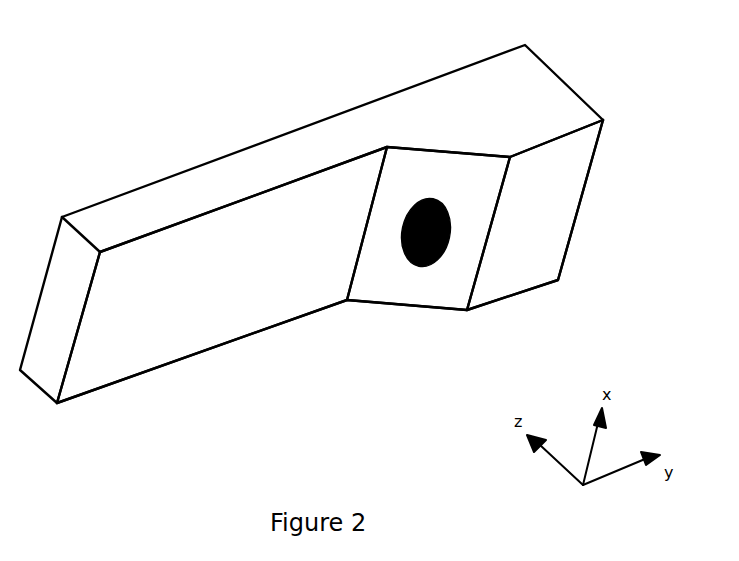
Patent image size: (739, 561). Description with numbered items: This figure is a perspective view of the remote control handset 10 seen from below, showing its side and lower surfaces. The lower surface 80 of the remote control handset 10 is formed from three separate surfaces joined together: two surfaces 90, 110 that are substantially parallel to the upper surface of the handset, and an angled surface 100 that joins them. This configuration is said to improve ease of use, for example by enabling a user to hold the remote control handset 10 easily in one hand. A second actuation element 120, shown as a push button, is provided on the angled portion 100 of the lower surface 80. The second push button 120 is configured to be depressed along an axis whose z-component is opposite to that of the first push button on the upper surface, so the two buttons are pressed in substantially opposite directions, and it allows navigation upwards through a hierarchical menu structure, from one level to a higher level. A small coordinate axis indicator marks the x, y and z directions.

The remote control handset 10 is at (295, 108).
The lower surface 80 is at (330, 318).
The first surface 90 is at (293, 270).
The angled surface 100 is at (398, 282).
The second surface 110 is at (524, 268).
The second actuation element 120 is at (450, 226).